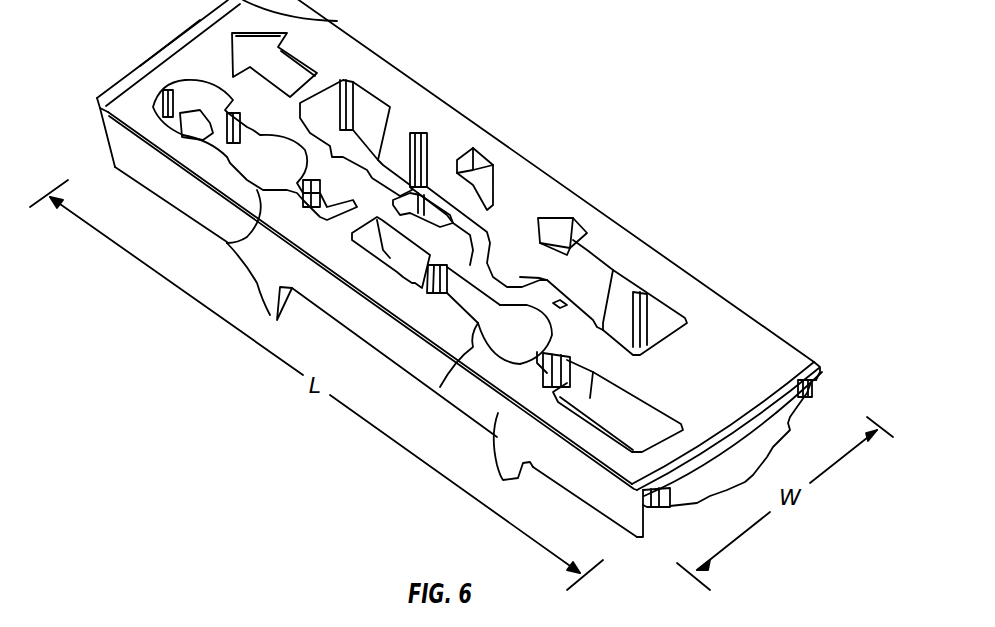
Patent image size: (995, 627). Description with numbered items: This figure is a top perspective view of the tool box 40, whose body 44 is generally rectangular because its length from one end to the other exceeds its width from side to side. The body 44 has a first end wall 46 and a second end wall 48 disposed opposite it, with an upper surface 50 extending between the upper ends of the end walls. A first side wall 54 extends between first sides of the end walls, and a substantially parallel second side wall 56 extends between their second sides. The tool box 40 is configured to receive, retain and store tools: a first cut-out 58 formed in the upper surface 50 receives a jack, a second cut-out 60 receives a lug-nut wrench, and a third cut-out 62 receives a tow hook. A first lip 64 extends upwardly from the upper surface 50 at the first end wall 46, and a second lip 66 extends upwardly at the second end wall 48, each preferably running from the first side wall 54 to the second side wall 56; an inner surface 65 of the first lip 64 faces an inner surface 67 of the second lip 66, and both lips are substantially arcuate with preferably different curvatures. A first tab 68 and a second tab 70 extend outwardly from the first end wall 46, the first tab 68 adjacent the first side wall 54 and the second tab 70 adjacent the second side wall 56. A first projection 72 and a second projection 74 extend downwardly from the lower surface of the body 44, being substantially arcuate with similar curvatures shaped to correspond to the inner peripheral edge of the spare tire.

The tool box 40 is at (412, 76).
The body 44 is at (630, 229).
The first end wall 46 is at (721, 467).
The second end wall 48 is at (110, 143).
The upper surface 50 is at (703, 317).
The first side wall 54 is at (488, 433).
The second side wall 56 is at (548, 172).
The first cut-out 58 is at (401, 132).
The second cut-out 60 is at (447, 395).
The third cut-out 62 is at (227, 243).
The first lip 64 is at (793, 364).
The inner surface of the first lip 65 is at (757, 395).
The second lip 66 is at (163, 53).
The inner surface of the second lip 67 is at (337, 22).
The first tab 68 is at (661, 497).
The second tab 70 is at (815, 383).
The first projection 72 is at (507, 484).
The second projection 74 is at (268, 316).